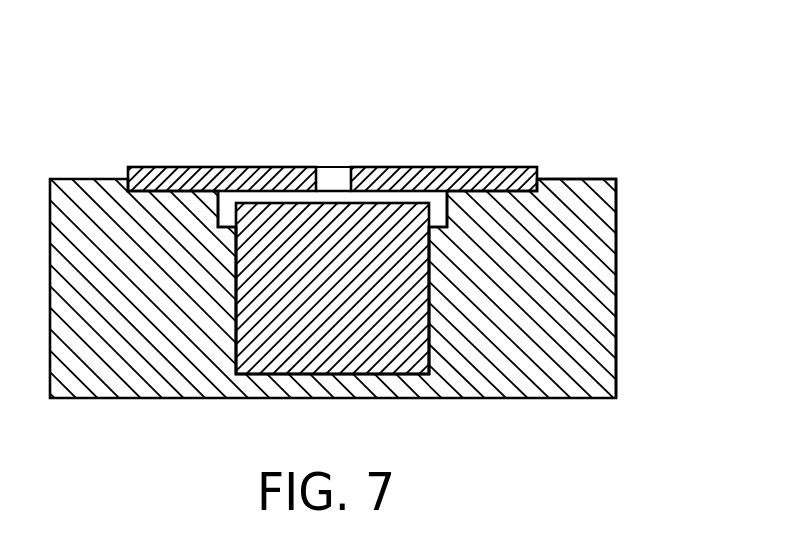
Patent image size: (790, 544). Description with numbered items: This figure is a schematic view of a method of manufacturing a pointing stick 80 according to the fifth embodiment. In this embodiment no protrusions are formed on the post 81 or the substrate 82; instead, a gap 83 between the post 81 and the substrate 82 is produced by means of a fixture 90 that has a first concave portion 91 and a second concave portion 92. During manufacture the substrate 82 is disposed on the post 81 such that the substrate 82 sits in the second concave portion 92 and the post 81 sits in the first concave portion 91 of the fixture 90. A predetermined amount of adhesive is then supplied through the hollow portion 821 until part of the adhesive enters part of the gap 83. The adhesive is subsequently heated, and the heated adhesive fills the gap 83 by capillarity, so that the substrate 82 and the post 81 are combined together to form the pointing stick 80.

The pointing stick 80 is at (324, 105).
The post 81 is at (272, 232).
The substrate 82 is at (217, 167).
The hollow portion 821 is at (336, 175).
The gap 83 is at (400, 197).
The fixture 90 is at (595, 283).
The first concave portion 91 is at (430, 338).
The second concave portion 92 is at (540, 179).